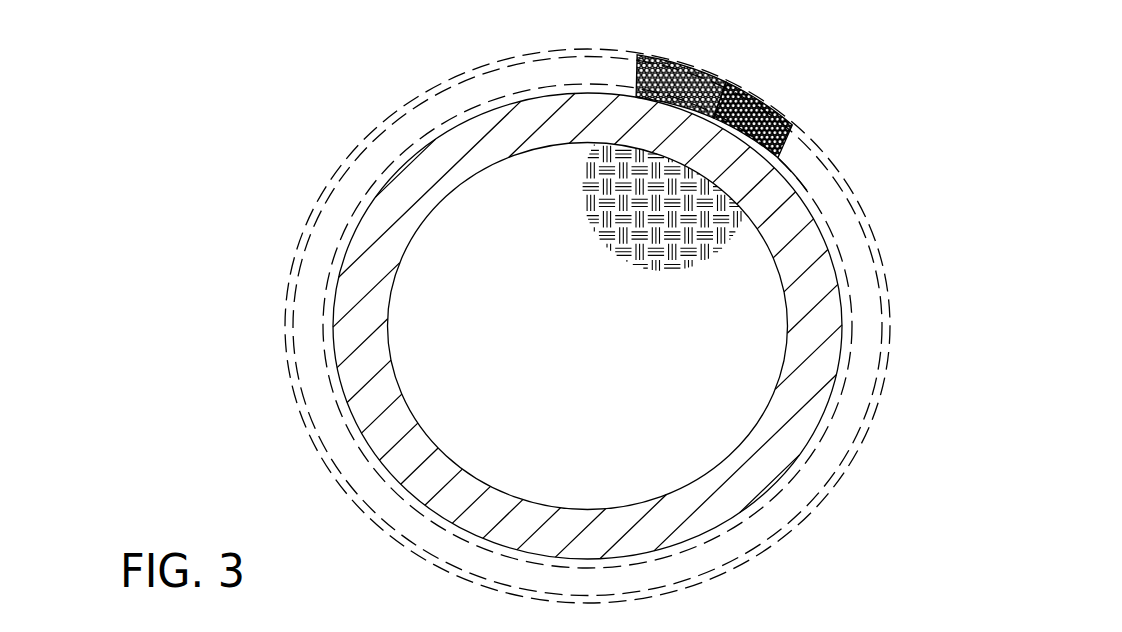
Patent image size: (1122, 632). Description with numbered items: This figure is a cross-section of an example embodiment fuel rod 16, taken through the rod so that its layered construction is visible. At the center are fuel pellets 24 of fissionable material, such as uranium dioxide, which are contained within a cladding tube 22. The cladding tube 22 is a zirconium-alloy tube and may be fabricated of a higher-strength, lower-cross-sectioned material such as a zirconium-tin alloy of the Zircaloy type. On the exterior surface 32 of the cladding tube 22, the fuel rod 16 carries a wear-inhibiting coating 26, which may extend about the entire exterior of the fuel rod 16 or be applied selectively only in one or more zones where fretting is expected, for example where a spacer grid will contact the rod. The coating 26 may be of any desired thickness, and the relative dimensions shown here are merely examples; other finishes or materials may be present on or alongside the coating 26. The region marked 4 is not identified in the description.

The electrode 4 is at (774, 116).
The fuel rod 16 is at (868, 558).
The cladding tube 22 is at (803, 348).
The fuel pellets 24 is at (603, 334).
The wear-inhibiting coating 26 is at (637, 66).
The exterior surface 32 is at (818, 162).